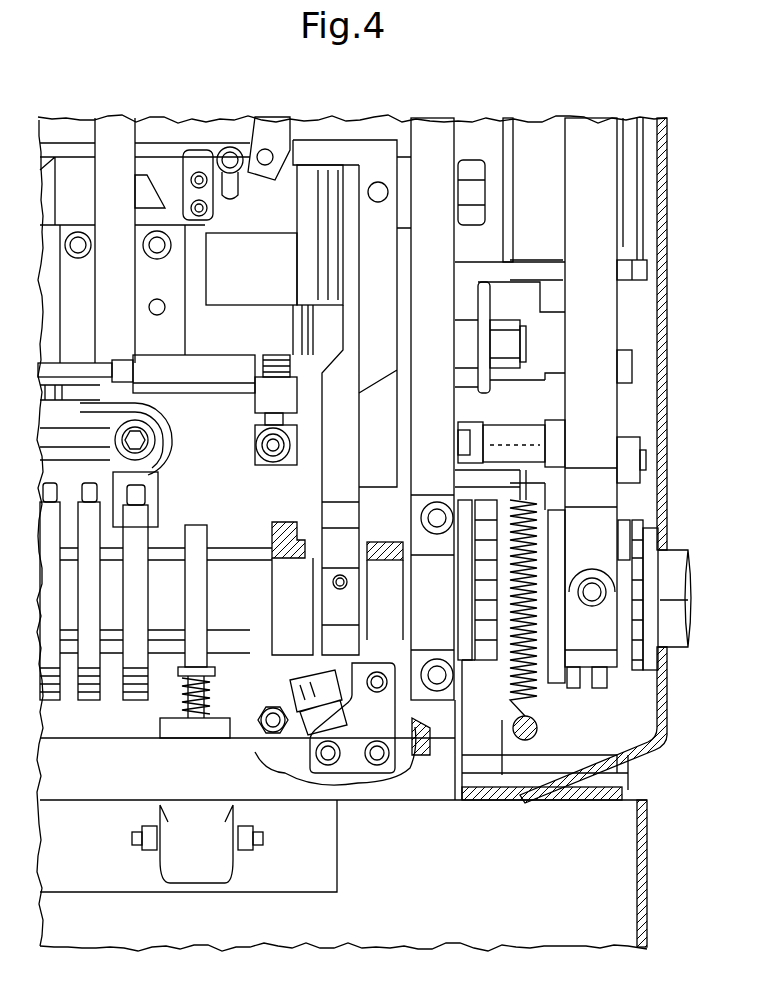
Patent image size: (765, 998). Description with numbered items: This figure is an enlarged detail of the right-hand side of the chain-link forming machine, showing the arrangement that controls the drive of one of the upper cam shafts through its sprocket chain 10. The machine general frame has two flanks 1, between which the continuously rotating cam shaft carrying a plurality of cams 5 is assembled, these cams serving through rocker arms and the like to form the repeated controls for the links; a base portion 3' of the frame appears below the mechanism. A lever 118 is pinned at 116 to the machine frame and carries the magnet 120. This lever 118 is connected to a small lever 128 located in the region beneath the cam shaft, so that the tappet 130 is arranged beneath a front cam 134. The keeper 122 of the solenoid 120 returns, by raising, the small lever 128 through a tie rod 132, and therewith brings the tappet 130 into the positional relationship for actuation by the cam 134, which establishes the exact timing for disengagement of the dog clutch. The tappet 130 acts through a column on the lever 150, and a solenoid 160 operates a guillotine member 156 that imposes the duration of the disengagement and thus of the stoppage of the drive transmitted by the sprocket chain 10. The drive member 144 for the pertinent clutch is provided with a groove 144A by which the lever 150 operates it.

The flanks of the machine general frame 1 is at (430, 127).
The base 3' is at (247, 751).
The cams 5 is at (135, 697).
The sprocket chain 10 is at (487, 662).
The pin 116 is at (365, 140).
The lever 118 is at (352, 348).
The magnet 120 is at (320, 140).
The keeper 122 is at (253, 398).
The small lever 128 is at (292, 735).
The tappet 130 is at (342, 688).
The tie rod 132 is at (245, 712).
The front cam 134 is at (272, 540).
The drive member 144 is at (570, 678).
The groove 144A is at (597, 662).
The lever 150 is at (592, 130).
The guillotine member 156 is at (545, 422).
The solenoid 160 is at (498, 130).